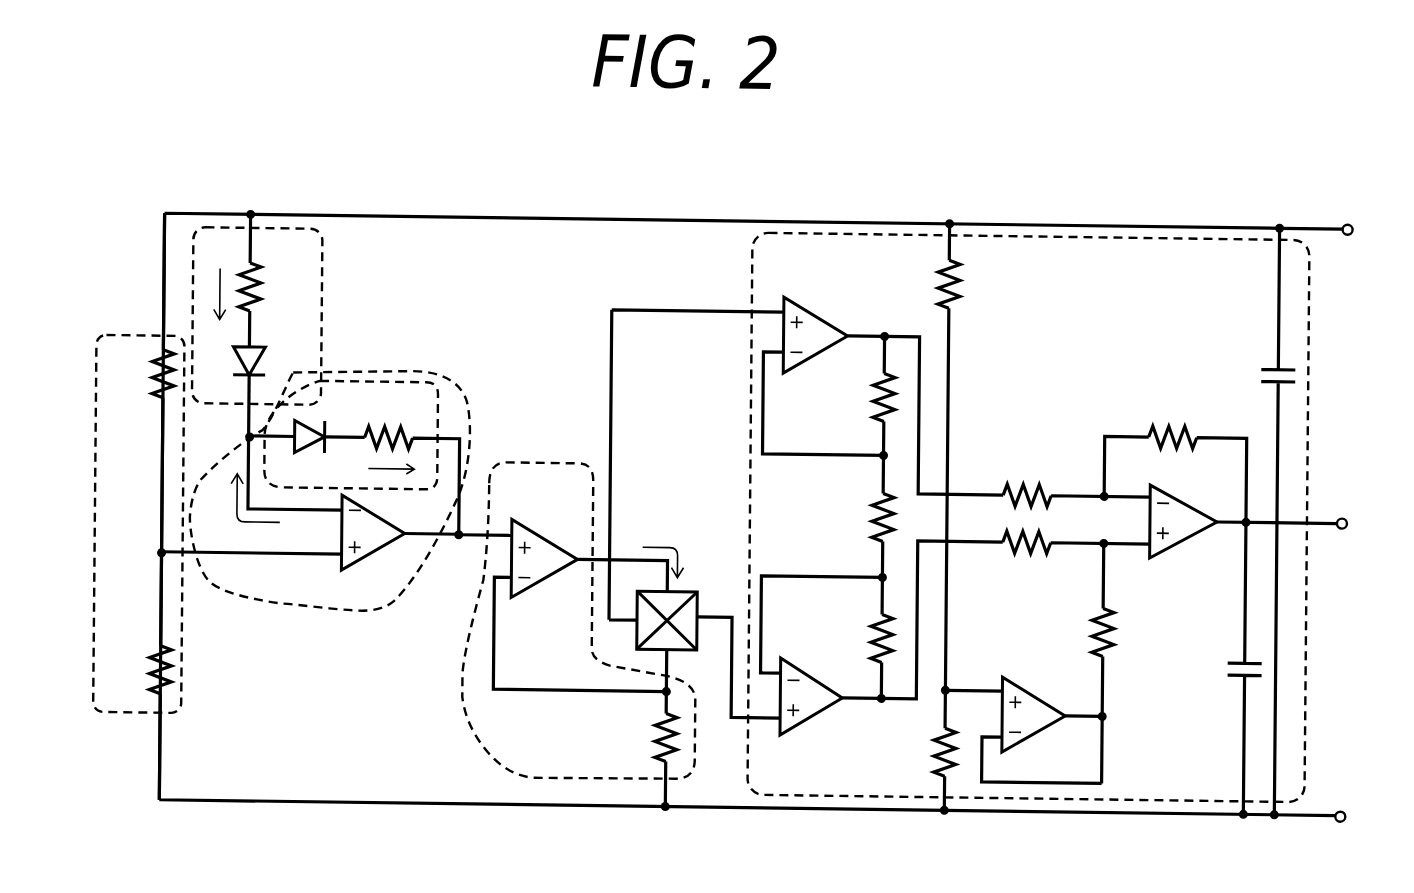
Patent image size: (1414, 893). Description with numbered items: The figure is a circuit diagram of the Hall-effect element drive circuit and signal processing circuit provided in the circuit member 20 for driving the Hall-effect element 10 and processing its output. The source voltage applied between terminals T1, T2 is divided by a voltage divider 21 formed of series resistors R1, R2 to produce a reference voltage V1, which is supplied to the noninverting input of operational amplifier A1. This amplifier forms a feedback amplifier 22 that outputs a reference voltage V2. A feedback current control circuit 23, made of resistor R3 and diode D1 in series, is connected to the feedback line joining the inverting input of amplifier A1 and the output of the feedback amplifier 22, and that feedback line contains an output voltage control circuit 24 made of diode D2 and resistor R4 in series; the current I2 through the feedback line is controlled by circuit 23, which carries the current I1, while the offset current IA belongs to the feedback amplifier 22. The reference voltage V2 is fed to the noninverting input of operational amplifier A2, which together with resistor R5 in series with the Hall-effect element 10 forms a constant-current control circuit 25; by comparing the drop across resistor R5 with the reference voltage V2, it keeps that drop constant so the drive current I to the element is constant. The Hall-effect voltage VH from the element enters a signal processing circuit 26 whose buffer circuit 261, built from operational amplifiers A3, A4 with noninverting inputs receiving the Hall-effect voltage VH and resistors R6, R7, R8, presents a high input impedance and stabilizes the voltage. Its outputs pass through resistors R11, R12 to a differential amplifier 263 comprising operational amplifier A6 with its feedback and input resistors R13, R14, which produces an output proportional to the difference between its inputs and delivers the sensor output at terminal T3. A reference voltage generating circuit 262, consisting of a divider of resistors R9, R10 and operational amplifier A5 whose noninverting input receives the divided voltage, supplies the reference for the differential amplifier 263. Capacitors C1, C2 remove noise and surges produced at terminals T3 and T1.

The circuit member 20 is at (708, 174).
The voltage divider 21 is at (130, 343).
The feedback amplifier 22 is at (281, 609).
The feedback current control circuit 23 is at (320, 267).
The output voltage control circuit 24 is at (459, 386).
The constant-current control circuit 25 is at (538, 462).
The signal processing circuit 26 is at (1096, 227).
The buffer circuit 261 is at (868, 299).
The reference voltage generating circuit 262 is at (960, 640).
The differential amplifier 263 is at (1052, 400).
The Hall-effect element 10 is at (701, 585).
The resistor R1 is at (139, 428).
The resistor R2 is at (136, 722).
The resistor R3 is at (271, 280).
The resistor R4 is at (412, 459).
The resistor R5 is at (644, 728).
The resistor R6 is at (858, 415).
The resistor R7 is at (856, 554).
The resistor R8 is at (856, 656).
The resistor R9 is at (970, 476).
The resistor R10 is at (912, 768).
The resistor R11 is at (1073, 477).
The resistor R12 is at (1073, 565).
The resistor R13 is at (1175, 454).
The resistor R14 is at (1134, 663).
The diode D1 is at (270, 384).
The diode D2 is at (307, 419).
The capacitor C1 is at (1223, 671).
The capacitor C2 is at (1253, 523).
The operational amplifier A1 is at (376, 558).
The operational amplifier A2 is at (547, 532).
The operational amplifier A3 is at (828, 308).
The operational amplifier A4 is at (822, 723).
The operational amplifier A5 is at (1047, 695).
The operational amplifier A6 is at (1197, 530).
The terminal T1 is at (1345, 226).
The terminal T2 is at (1343, 813).
The terminal T3 is at (1343, 520).
The current I1 is at (220, 275).
The current I2 is at (374, 468).
The offset current IA is at (241, 514).
The drive current I is at (663, 542).
The reference voltage V1 is at (226, 554).
The reference voltage V2 is at (474, 554).
The Hall-effect voltage VH is at (696, 514).